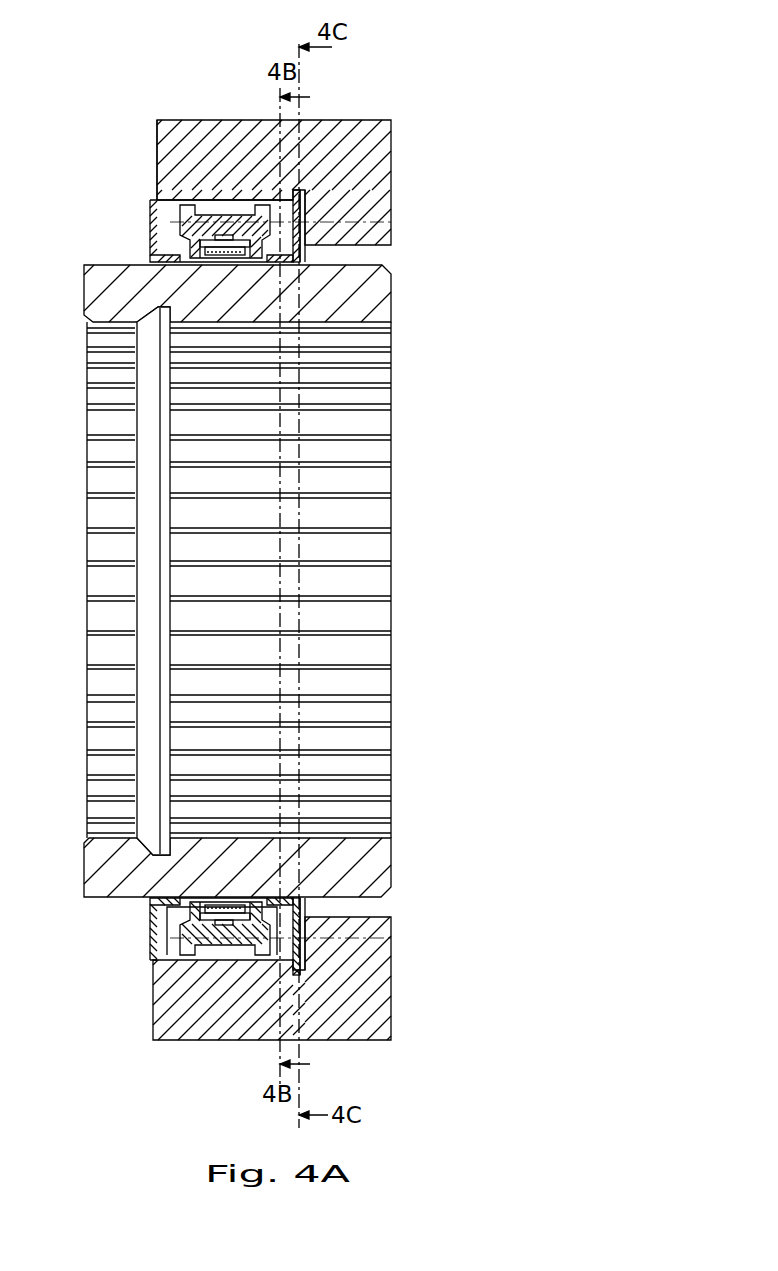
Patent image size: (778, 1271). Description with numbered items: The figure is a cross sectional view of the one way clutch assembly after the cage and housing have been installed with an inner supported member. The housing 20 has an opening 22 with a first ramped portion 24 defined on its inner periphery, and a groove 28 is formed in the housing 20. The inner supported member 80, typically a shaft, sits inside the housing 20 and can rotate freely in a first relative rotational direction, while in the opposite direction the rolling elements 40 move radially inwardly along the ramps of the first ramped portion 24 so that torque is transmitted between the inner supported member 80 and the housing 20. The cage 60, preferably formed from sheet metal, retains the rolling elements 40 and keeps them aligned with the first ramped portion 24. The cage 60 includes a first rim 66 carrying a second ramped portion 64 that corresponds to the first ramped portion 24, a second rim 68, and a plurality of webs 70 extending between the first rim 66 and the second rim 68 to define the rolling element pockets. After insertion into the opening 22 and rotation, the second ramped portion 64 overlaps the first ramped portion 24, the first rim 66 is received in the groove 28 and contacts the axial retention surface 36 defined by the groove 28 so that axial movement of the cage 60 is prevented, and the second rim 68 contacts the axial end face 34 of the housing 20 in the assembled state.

The housing 20 is at (392, 133).
The opening 22 is at (176, 965).
The first ramped portion 24 is at (175, 198).
The groove 28 is at (305, 189).
The axial end face 34 is at (157, 137).
The axial retention surface 36 is at (288, 192).
The rolling element 40 is at (170, 228).
The cage 60 is at (148, 932).
The second ramped portion 64 is at (297, 978).
The first rim 66 is at (306, 216).
The second rim 68 is at (155, 212).
The web 70 is at (217, 232).
The inner supported member 80 is at (392, 288).